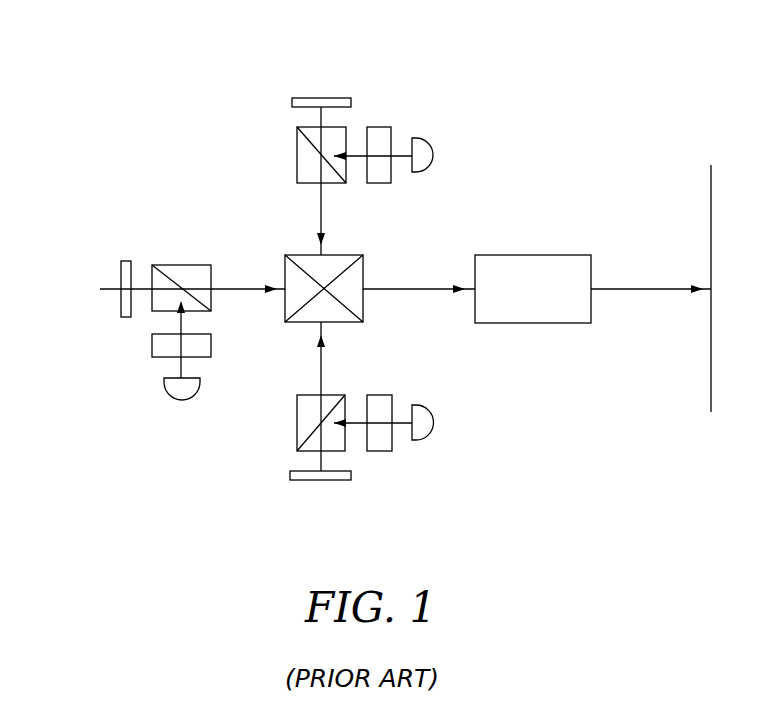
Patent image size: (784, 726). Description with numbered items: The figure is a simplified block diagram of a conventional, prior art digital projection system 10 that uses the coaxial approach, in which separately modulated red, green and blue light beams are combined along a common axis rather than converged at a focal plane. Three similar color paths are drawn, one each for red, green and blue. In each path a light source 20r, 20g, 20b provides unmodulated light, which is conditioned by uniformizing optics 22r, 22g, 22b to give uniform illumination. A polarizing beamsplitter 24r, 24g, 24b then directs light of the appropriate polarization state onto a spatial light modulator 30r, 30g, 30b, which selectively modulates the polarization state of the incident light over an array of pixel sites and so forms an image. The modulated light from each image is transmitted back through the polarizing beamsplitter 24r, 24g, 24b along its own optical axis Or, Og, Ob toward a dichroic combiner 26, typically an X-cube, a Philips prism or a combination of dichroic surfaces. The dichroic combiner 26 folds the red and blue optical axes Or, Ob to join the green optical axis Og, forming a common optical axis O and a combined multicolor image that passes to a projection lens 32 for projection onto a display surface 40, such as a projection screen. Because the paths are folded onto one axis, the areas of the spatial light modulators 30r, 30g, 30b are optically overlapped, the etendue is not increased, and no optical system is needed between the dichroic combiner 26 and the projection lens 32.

The digital projection system 10 is at (120, 81).
The light source 20b is at (436, 157).
The light source 20g is at (166, 384).
The light source 20r is at (436, 424).
The uniformizing optics 22b is at (378, 127).
The uniformizing optics 22g is at (152, 345).
The uniformizing optics 22r is at (378, 395).
The polarizing beamsplitter 24b is at (297, 156).
The polarizing beamsplitter 24g is at (178, 265).
The polarizing beamsplitter 24r is at (297, 423).
The dichroic combiner 26 is at (287, 321).
The spatial light modulator 30b is at (318, 98).
The spatial light modulator 30g is at (102, 289).
The spatial light modulator 30r is at (318, 481).
The projection lens 32 is at (535, 255).
The display surface 40 is at (711, 350).
The optical axis Ob is at (321, 195).
The optical axis Og is at (240, 289).
The optical axis Or is at (321, 371).
The common optical axis O is at (655, 289).